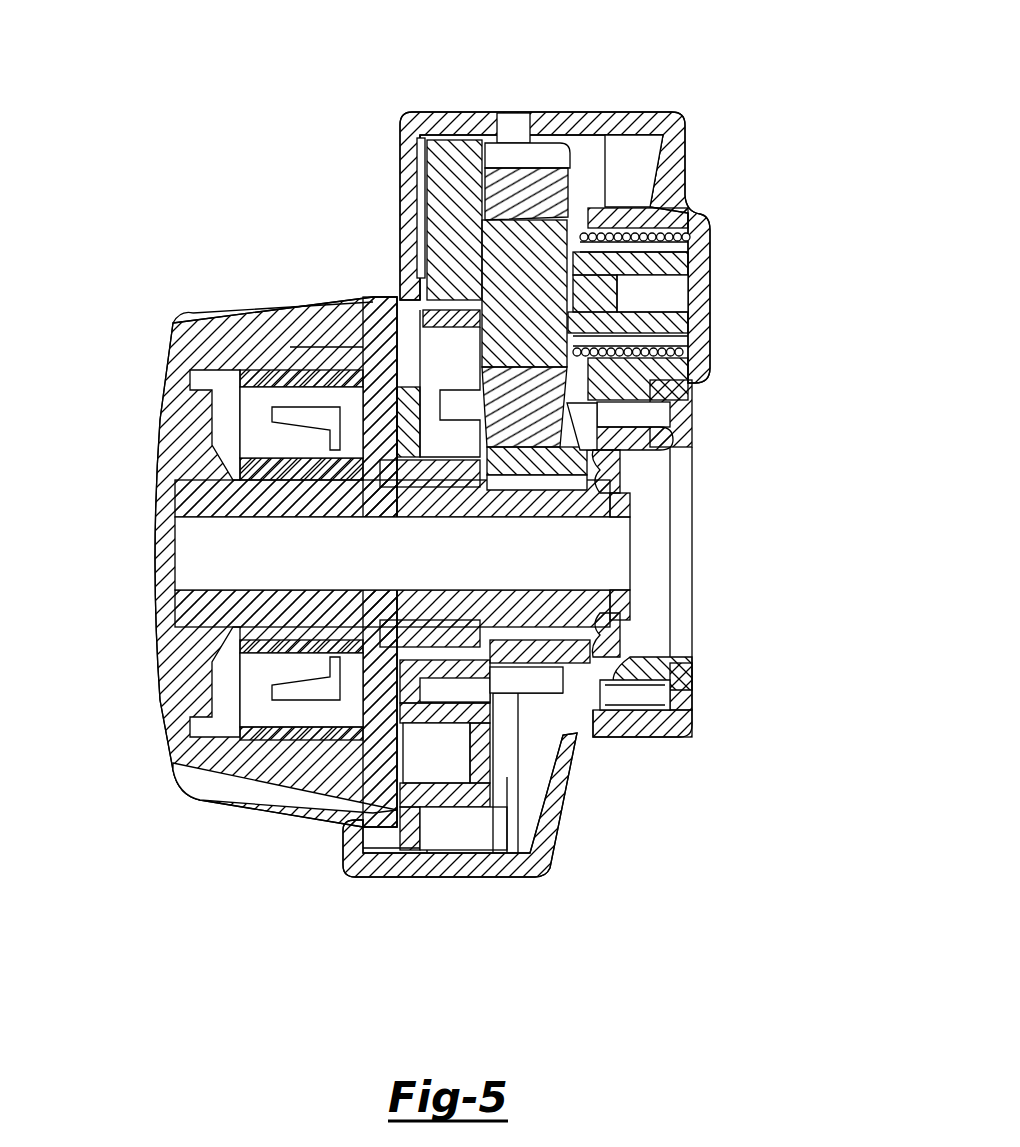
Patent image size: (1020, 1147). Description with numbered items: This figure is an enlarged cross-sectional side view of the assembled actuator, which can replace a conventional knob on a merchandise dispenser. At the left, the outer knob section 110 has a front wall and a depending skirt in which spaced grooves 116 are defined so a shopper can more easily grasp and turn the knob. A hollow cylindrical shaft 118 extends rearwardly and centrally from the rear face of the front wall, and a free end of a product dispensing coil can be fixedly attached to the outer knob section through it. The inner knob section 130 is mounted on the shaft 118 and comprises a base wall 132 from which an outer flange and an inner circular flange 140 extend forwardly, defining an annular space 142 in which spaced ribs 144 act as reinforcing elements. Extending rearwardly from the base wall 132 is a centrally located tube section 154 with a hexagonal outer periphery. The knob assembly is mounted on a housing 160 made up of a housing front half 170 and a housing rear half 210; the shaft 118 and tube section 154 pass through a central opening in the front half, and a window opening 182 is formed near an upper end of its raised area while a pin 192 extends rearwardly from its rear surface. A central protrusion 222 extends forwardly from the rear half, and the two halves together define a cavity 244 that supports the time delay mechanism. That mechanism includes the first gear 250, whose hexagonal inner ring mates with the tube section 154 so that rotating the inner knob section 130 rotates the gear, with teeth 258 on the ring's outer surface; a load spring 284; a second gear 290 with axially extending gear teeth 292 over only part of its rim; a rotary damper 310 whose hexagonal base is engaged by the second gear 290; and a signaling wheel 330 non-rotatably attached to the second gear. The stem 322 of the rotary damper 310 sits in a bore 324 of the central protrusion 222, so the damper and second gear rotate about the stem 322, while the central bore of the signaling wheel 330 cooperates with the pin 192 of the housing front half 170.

The outer knob section 110 is at (155, 645).
The spaced grooves 116 is at (203, 347).
The hollow cylindrical shaft 118 is at (625, 607).
The inner knob section 130 is at (353, 641).
The base wall 132 is at (377, 347).
The inner circular flange 140 is at (255, 470).
The annular space 142 is at (273, 733).
The spaced ribs 144 is at (300, 440).
The tube section 154 is at (538, 480).
The housing 160 is at (424, 887).
The housing front half 170 is at (430, 112).
The window opening 182 is at (417, 165).
The pin 192 is at (627, 365).
The housing rear half 210 is at (660, 112).
The central protrusion 222 is at (610, 350).
The cavity 244 is at (452, 843).
The first gear 250 is at (576, 697).
The teeth 258 is at (540, 680).
The load spring 284 is at (660, 247).
The second gear 290 is at (513, 167).
The gear teeth 292 is at (537, 153).
The rotary damper 310 is at (567, 223).
The stem 322 is at (603, 298).
The bore 324 is at (690, 290).
The signaling wheel 330 is at (423, 207).